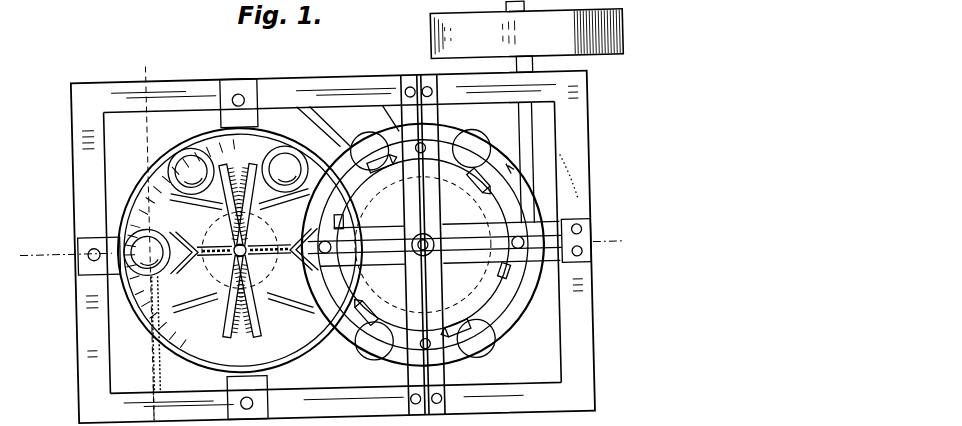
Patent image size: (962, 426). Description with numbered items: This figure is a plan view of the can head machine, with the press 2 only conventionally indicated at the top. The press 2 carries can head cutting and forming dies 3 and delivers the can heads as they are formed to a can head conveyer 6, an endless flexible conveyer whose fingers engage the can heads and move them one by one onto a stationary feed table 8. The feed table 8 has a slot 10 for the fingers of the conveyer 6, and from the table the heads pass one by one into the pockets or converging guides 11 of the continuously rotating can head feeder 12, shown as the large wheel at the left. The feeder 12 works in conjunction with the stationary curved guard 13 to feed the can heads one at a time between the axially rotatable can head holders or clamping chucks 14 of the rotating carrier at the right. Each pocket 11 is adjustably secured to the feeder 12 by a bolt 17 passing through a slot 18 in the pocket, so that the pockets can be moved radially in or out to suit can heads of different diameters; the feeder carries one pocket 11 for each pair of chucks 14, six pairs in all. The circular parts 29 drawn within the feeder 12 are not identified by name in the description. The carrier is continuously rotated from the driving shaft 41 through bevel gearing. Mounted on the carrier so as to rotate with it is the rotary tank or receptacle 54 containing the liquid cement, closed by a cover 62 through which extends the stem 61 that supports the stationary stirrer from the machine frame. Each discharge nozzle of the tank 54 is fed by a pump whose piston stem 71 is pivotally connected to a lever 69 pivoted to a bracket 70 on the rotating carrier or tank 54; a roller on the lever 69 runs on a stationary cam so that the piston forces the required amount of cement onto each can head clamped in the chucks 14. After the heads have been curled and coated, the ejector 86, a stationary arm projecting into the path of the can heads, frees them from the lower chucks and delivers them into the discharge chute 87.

The press 2 is at (631, 247).
The can head cutting and forming die 3 is at (134, 68).
The can head conveyer 6 is at (157, 362).
The stationary feed table 8 is at (240, 250).
The slot 10 is at (147, 323).
The pockets or converging guides 11 is at (190, 310).
The can head feeder 12 is at (244, 260).
The stationary curved guard 13 is at (170, 148).
The upper can holder or clamping chuck 14 is at (480, 333).
The bolt 17 is at (232, 208).
The slot 18 is at (231, 295).
The pockets 29 is at (215, 211).
The driving shaft 41 is at (562, 141).
The rotary tank or receptacle 54 is at (490, 295).
The stem 61 is at (433, 240).
The cover 62 is at (423, 245).
The lever 69 is at (470, 396).
The bracket 70 is at (372, 312).
The piston stem 71 is at (492, 186).
The ejector 86 is at (363, 147).
The discharge chute 87 is at (379, 118).